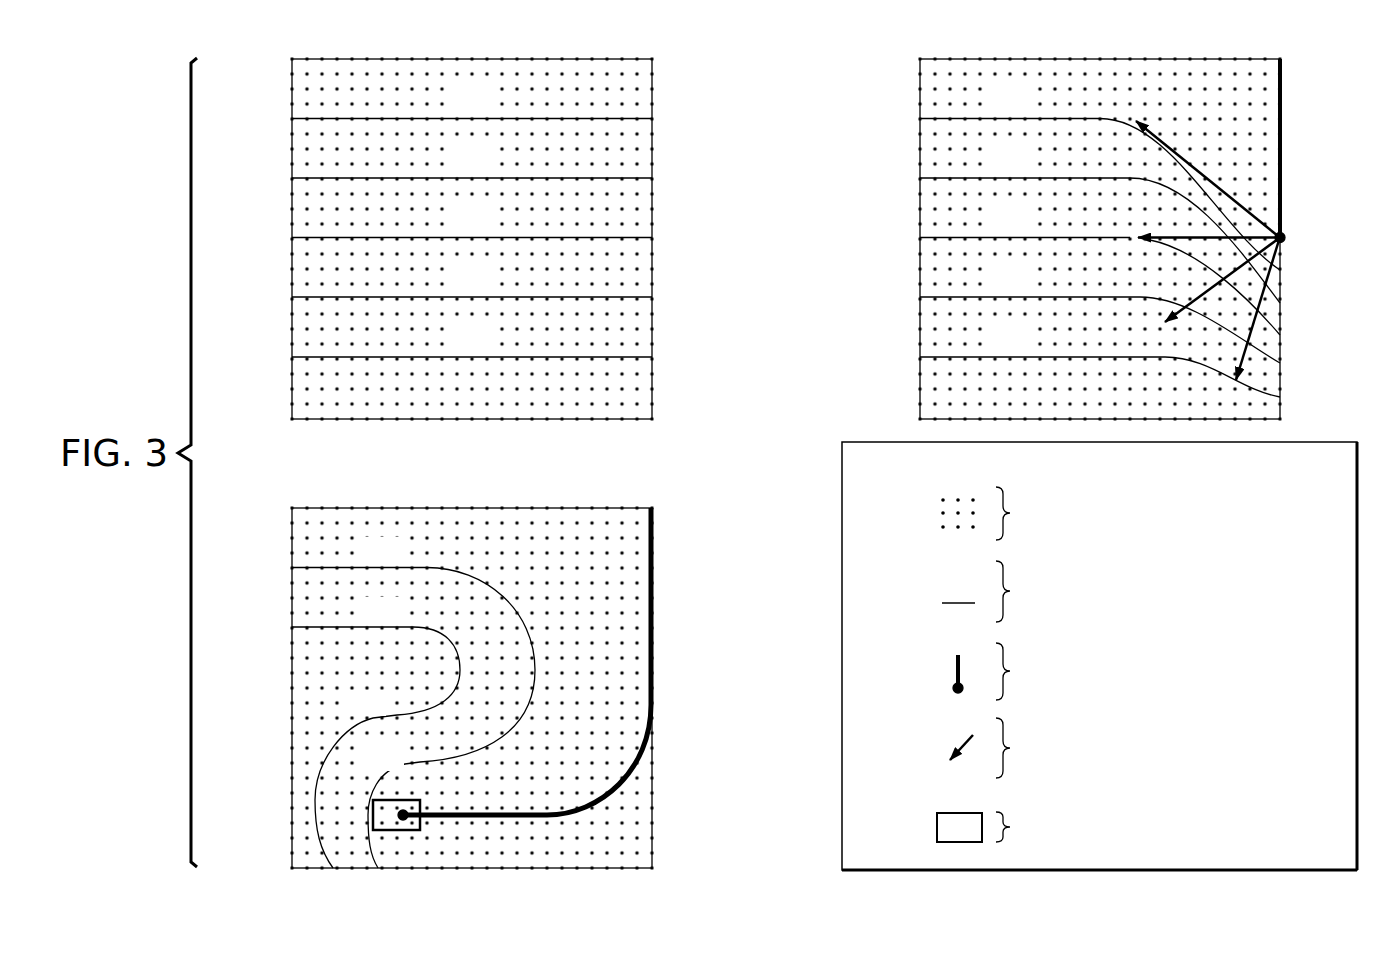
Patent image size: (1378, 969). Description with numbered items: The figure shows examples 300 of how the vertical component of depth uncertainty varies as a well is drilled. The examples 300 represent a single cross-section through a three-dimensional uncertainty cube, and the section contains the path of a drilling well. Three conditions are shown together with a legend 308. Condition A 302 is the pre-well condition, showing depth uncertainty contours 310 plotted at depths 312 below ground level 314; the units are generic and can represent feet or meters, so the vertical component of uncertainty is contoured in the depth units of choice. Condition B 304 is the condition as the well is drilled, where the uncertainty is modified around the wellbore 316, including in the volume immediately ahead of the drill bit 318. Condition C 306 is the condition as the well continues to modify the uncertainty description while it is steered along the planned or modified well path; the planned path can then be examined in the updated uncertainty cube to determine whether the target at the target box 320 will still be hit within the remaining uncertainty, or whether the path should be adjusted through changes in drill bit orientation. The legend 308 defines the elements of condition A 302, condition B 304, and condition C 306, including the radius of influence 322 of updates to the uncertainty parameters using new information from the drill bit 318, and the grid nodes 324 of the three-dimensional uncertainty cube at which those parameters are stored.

The examples 300 is at (160, 142).
The condition A 302 is at (665, 204).
The condition B 304 is at (1293, 205).
The condition C 306 is at (665, 722).
The legend 308 is at (800, 783).
The depth uncertainty contours 310 is at (627, 357).
The depths 312 is at (290, 82).
The ground level 314 is at (360, 58).
The wellbore 316 is at (1281, 141).
The drill bit 318 is at (1285, 240).
The target box 320 is at (393, 832).
The radius of influence 322 is at (940, 738).
The grid nodes 324 is at (940, 512).